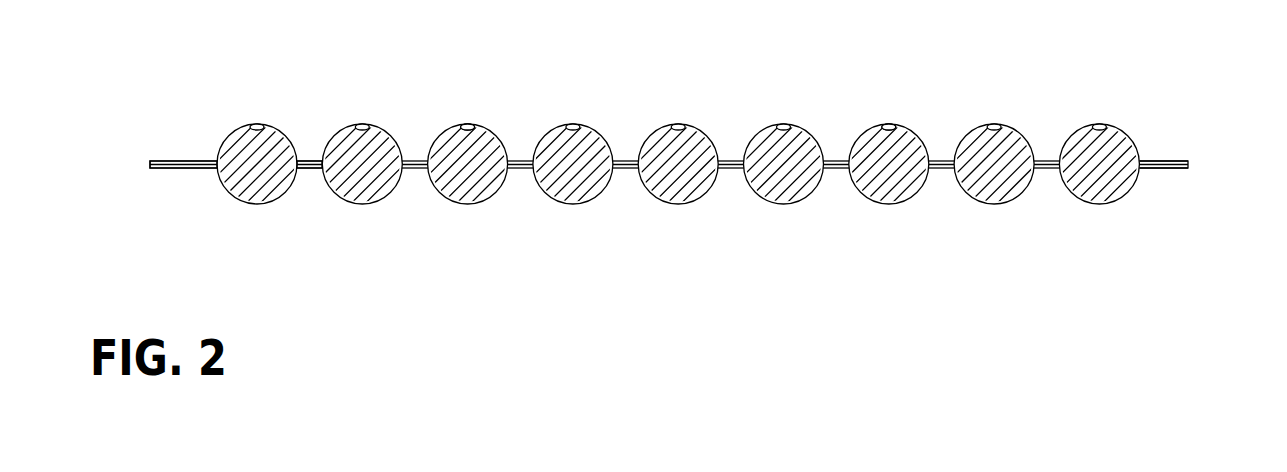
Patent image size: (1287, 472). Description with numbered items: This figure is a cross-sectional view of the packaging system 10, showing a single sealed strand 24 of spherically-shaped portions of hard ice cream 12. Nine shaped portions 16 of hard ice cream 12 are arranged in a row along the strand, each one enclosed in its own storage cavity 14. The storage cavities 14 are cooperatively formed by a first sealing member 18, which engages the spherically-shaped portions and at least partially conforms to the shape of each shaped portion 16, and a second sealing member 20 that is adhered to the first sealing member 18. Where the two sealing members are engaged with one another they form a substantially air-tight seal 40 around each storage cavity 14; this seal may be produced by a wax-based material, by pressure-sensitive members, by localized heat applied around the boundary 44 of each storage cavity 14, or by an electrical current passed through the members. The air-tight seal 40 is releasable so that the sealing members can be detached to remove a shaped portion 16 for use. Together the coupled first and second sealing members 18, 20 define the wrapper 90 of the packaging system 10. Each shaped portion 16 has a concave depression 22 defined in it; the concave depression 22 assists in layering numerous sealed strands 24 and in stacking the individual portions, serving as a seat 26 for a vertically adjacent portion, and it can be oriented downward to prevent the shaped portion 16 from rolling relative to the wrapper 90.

The packaging system 10 is at (887, 237).
The hard ice cream 12 is at (1093, 177).
The storage cavity 14 is at (386, 126).
The shaped portion 16 is at (712, 198).
The first sealing member 18 is at (1165, 161).
The second sealing member 20 is at (1168, 169).
The concave depression 22 is at (468, 124).
The sealed strand 24 is at (516, 214).
The seat 26 is at (896, 122).
The air-tight seal 40 is at (186, 160).
The boundary 44 is at (310, 160).
The wrapper 90 is at (770, 117).